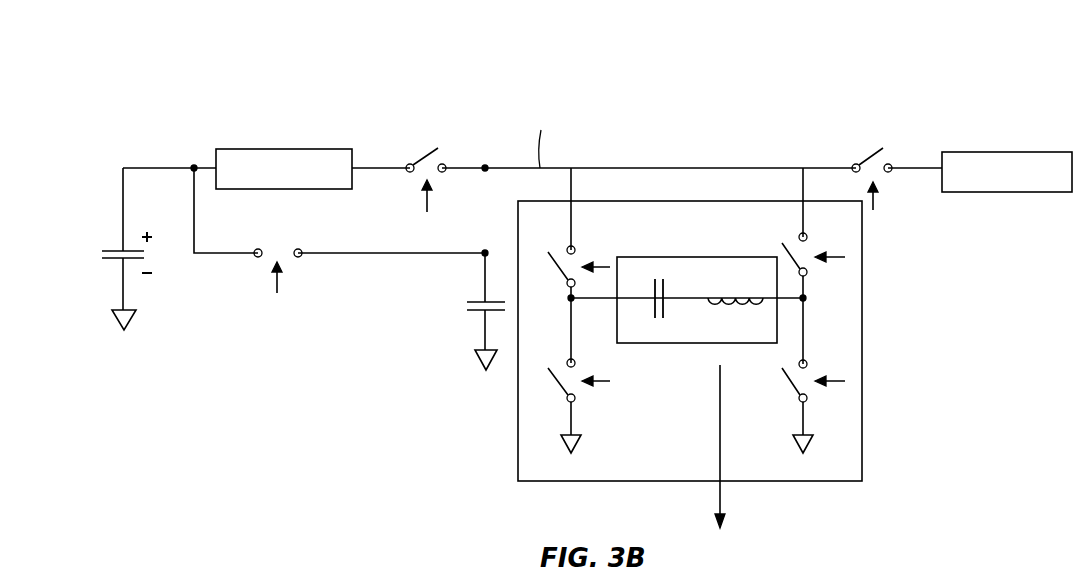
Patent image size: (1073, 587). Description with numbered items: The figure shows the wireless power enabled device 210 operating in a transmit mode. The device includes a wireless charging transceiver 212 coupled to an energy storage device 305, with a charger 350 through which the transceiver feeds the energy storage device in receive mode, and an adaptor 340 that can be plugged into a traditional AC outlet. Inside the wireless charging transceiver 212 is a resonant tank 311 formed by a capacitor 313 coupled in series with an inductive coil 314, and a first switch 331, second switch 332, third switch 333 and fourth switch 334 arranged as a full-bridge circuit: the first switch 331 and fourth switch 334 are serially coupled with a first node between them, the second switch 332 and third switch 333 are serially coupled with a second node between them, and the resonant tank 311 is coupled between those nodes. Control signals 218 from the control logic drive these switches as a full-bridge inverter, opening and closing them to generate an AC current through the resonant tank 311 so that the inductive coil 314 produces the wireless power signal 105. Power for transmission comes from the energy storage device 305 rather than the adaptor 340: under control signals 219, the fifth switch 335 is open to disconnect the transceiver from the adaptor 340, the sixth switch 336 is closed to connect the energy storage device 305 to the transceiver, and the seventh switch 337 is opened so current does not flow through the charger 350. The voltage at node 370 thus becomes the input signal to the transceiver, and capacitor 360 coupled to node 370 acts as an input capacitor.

The wireless power signal 105 is at (720, 507).
The wireless power enabled device 210 is at (694, 96).
The wireless charging transceiver 212 is at (862, 322).
The control signals 218 is at (597, 265).
The control signals 219 is at (427, 203).
The energy storage device 305 is at (110, 248).
The resonant tank 311 is at (688, 343).
The capacitor 313 is at (665, 290).
The inductive coil 314 is at (728, 307).
The first switch 331 is at (555, 268).
The second switch 332 is at (782, 247).
The third switch 333 is at (790, 383).
The fourth switch 334 is at (555, 385).
The fifth switch 335 is at (870, 158).
The sixth switch 336 is at (281, 251).
The seventh switch 337 is at (425, 148).
The adaptor 340 is at (995, 150).
The charger 350 is at (291, 149).
The capacitor 360 is at (467, 303).
The node 370 is at (577, 168).